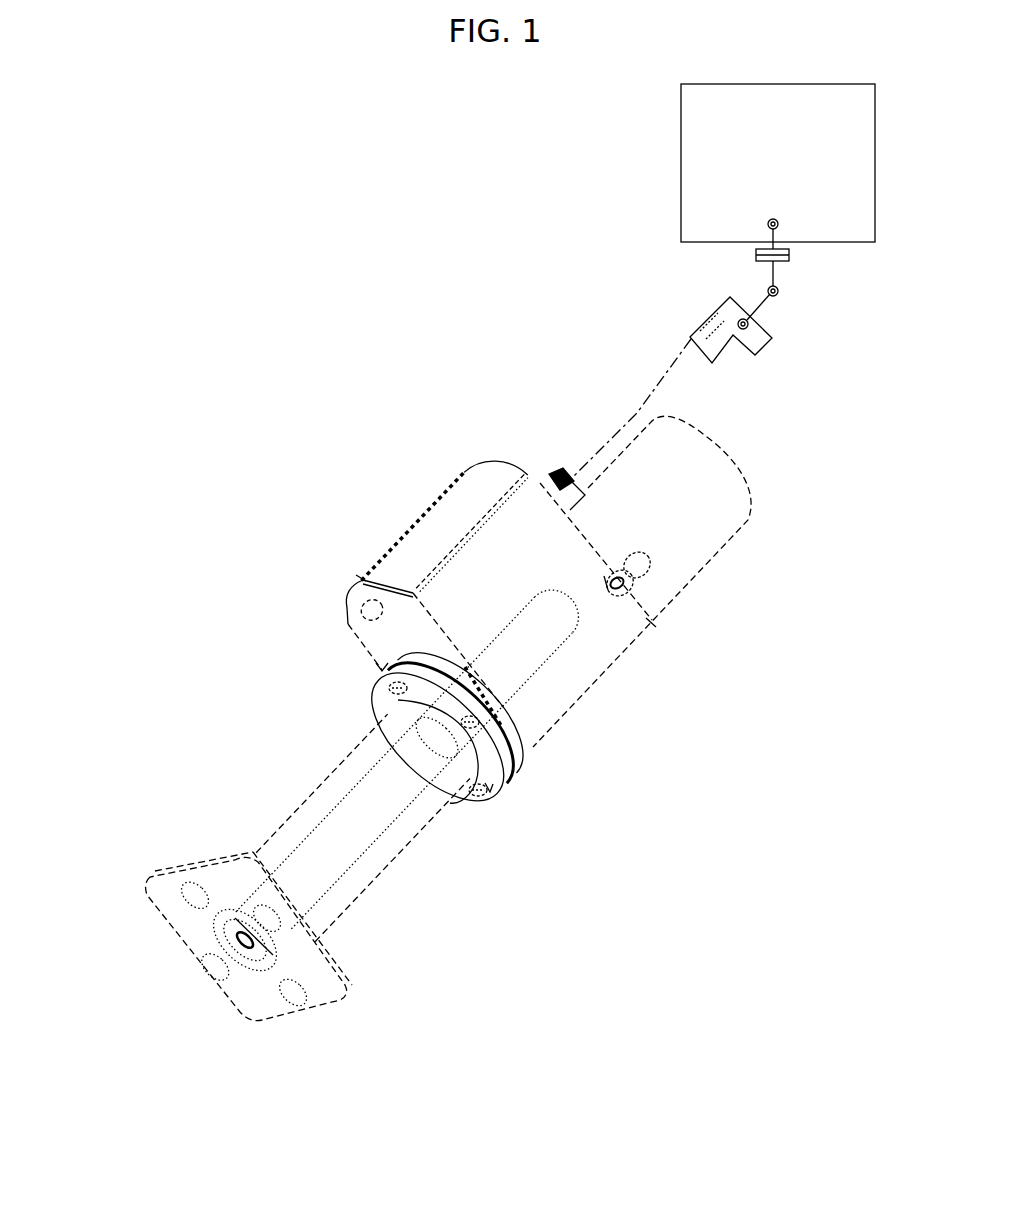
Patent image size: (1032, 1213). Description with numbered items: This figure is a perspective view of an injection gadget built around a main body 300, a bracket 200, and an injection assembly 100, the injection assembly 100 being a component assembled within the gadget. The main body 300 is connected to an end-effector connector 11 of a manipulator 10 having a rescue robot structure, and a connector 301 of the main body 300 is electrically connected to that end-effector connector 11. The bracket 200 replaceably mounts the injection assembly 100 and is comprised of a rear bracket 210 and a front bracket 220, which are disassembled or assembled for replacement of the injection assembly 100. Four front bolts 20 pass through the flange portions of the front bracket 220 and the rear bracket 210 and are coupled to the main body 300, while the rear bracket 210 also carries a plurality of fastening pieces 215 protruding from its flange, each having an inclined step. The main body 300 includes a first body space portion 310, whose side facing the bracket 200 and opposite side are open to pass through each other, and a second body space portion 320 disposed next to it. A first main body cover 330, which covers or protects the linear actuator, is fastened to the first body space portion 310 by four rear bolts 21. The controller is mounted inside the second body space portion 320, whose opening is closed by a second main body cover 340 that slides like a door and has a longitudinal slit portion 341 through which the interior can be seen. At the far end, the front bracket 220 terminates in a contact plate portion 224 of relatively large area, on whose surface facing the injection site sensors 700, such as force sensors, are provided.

The manipulator 10 is at (792, 166).
The end-effector connector 11 is at (754, 345).
The front bolts 20 is at (486, 797).
The rear bolts 21 is at (655, 563).
The injection assembly 100 is at (341, 790).
The bracket 200 is at (484, 753).
The rear bracket 210 is at (528, 760).
The fastening pieces 215 is at (398, 688).
The front bracket 220 is at (505, 783).
The contact plate portion 224 is at (165, 927).
The main body 300 is at (545, 585).
The connector 301 is at (560, 474).
The first body space portion 310 is at (560, 684).
The second body space portion 320 is at (458, 594).
The first main body cover 330 is at (729, 533).
The second main body cover 340 is at (427, 535).
The slit portion 341 is at (497, 505).
The sensor 700 is at (207, 922).